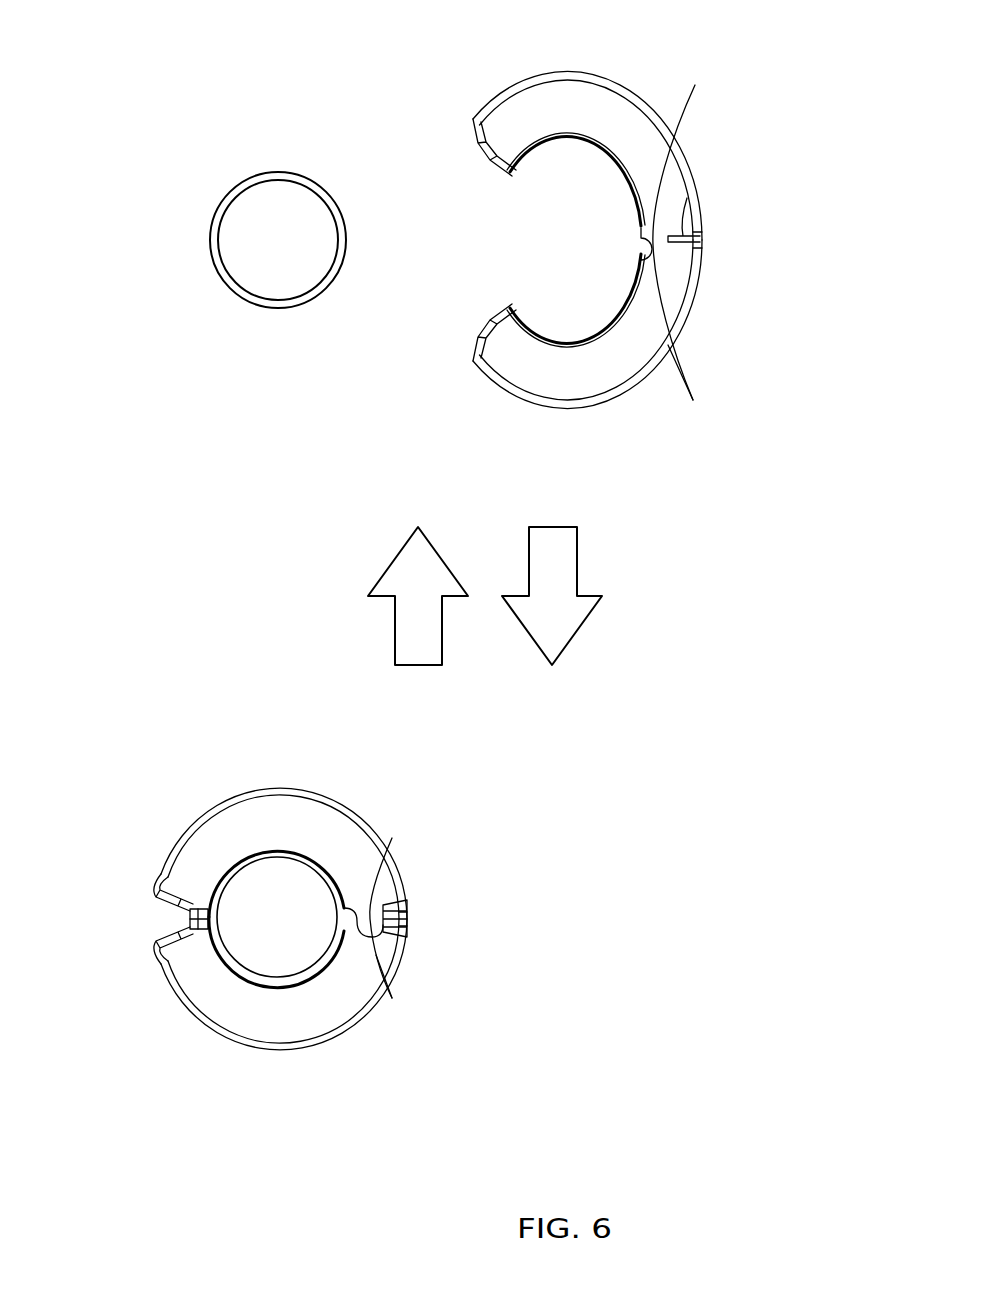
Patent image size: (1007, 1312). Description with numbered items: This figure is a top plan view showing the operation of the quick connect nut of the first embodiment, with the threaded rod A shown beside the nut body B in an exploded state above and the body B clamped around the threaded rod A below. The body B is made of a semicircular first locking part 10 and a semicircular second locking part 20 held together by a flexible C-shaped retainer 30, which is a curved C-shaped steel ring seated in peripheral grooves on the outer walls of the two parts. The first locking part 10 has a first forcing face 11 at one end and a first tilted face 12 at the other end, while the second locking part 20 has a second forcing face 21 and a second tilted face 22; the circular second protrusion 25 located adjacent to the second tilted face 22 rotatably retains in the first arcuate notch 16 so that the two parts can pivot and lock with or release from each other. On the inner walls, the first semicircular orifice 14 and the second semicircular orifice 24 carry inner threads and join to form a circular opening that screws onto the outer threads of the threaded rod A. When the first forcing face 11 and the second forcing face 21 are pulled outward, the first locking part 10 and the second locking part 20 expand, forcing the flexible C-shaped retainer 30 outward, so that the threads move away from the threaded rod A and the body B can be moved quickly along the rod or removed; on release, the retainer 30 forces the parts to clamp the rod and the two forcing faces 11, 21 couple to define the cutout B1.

The threaded rod A is at (225, 242).
The body B is at (775, 103).
The cutout B1 is at (138, 915).
The first locking part 10 is at (542, 380).
The first forcing face 11 is at (483, 323).
The first tilted face 12 is at (688, 250).
The first semicircular orifice 14 is at (588, 345).
The first arcuate notch 16 is at (415, 1005).
The second locking part 20 is at (540, 102).
The second forcing face 21 is at (468, 152).
The second tilted face 22 is at (690, 236).
The second semicircular orifice 24 is at (588, 136).
The second protrusion 25 is at (370, 912).
The flexible C-shaped retainer 30 is at (700, 240).